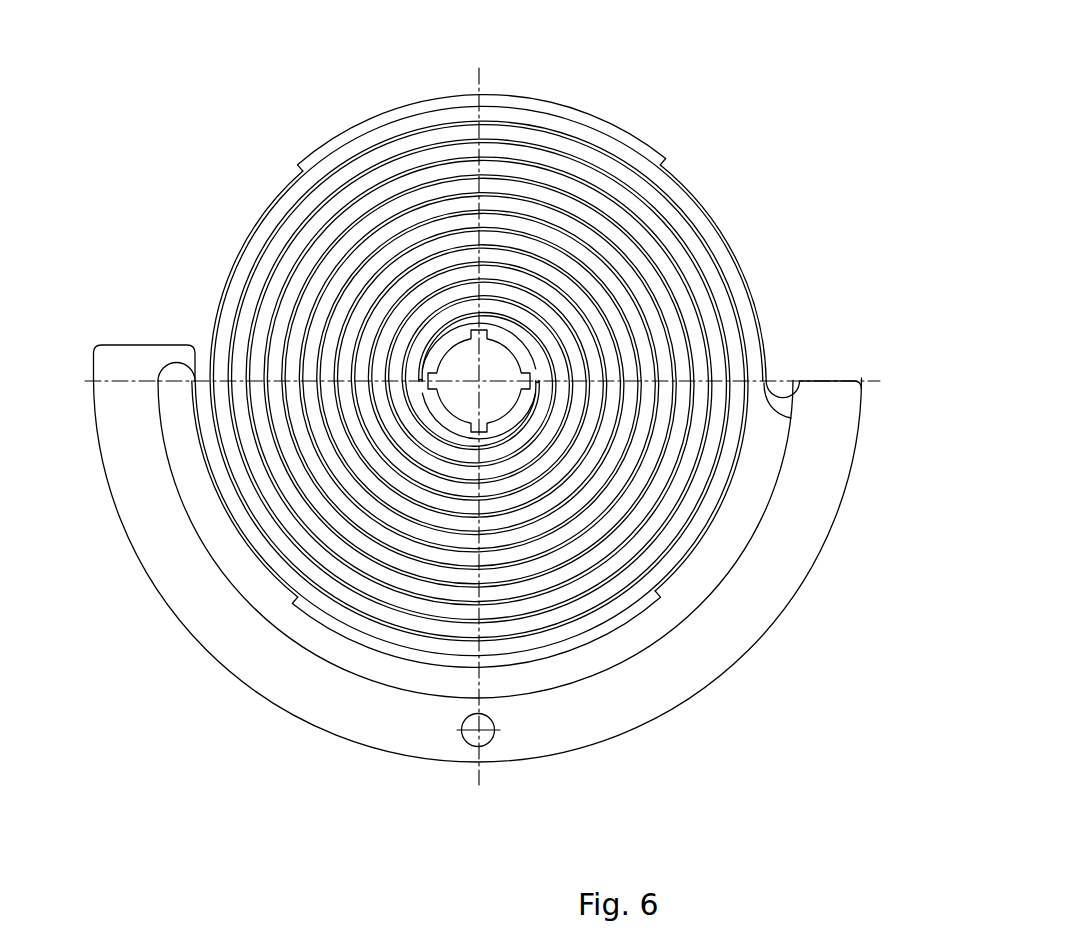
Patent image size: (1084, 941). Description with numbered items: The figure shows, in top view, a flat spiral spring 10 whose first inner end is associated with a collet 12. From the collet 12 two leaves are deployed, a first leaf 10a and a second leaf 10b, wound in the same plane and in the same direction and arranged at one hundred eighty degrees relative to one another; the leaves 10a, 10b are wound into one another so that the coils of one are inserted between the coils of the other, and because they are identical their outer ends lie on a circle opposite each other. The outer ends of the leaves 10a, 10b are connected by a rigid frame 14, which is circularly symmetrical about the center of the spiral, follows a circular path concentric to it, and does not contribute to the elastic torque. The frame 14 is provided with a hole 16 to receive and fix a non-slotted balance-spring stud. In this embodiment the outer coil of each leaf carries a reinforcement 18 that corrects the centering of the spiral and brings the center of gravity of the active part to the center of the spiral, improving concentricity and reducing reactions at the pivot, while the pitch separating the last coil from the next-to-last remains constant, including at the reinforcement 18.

The flat spiral spring 10 is at (720, 133).
The first leaf 10a is at (413, 336).
The second leaf 10b is at (387, 390).
The collet 12 is at (443, 318).
The rigid frame 14 is at (298, 678).
The hole 16 is at (468, 735).
The reinforcement 18 is at (408, 108).